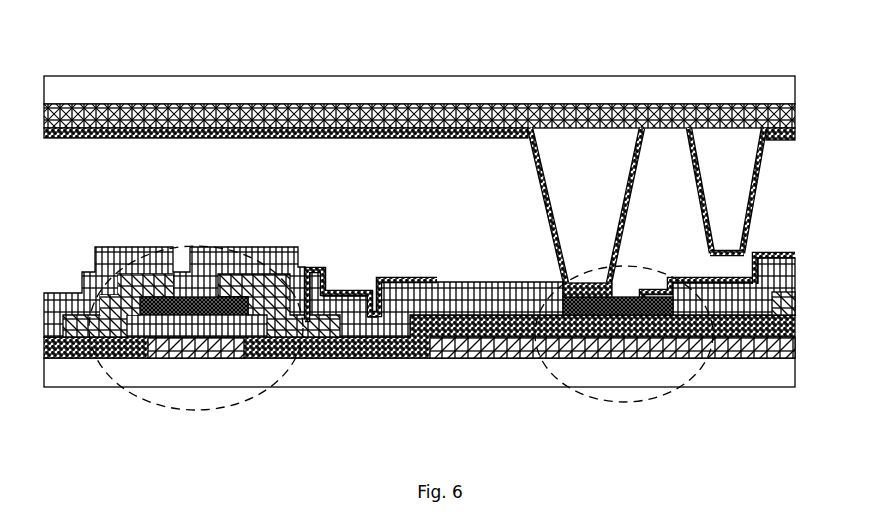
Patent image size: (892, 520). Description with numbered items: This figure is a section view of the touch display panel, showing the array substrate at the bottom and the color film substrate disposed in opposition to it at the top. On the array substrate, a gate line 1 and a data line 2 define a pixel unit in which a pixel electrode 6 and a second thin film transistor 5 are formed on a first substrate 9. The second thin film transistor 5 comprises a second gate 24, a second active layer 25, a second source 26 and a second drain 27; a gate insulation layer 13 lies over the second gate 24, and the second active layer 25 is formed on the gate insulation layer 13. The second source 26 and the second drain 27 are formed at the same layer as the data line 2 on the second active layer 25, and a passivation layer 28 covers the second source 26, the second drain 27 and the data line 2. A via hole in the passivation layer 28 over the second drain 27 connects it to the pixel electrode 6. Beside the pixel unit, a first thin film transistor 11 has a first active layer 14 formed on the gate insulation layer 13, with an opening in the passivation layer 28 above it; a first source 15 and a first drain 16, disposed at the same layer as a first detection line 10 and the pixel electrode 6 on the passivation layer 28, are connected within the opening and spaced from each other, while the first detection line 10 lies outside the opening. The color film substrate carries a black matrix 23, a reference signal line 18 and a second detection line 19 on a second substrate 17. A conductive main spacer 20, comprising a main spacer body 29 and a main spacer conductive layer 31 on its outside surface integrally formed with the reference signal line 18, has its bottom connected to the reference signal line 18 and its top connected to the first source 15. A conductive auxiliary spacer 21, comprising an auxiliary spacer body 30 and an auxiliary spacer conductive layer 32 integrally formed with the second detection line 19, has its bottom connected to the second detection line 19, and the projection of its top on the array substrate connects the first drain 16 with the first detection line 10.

The gate line 1 is at (448, 348).
The data line 2 is at (785, 302).
The second thin film transistor 5 is at (237, 408).
The pixel electrode 6 is at (395, 280).
The first substrate 9 is at (783, 375).
The first detection line 10 is at (783, 256).
The first thin film transistor 11 is at (667, 393).
The gate insulation layer 13 is at (783, 327).
The first active layer 14 is at (657, 312).
The first source 15 is at (567, 283).
The first drain 16 is at (692, 280).
The second substrate 17 is at (780, 90).
The reference signal line 18 is at (272, 136).
The second detection line 19 is at (793, 139).
The main spacer 20 is at (603, 146).
The auxiliary spacer 21 is at (728, 131).
The black matrix 23 is at (782, 124).
The second gate 24 is at (240, 346).
The second active layer 25 is at (173, 297).
The second source 26 is at (113, 308).
The second drain 27 is at (250, 280).
The passivation layer 28 is at (480, 290).
The main spacer body 29 is at (600, 147).
The auxiliary spacer body 30 is at (733, 147).
The main spacer conductive layer 31 is at (643, 147).
The auxiliary spacer conductive layer 32 is at (693, 147).